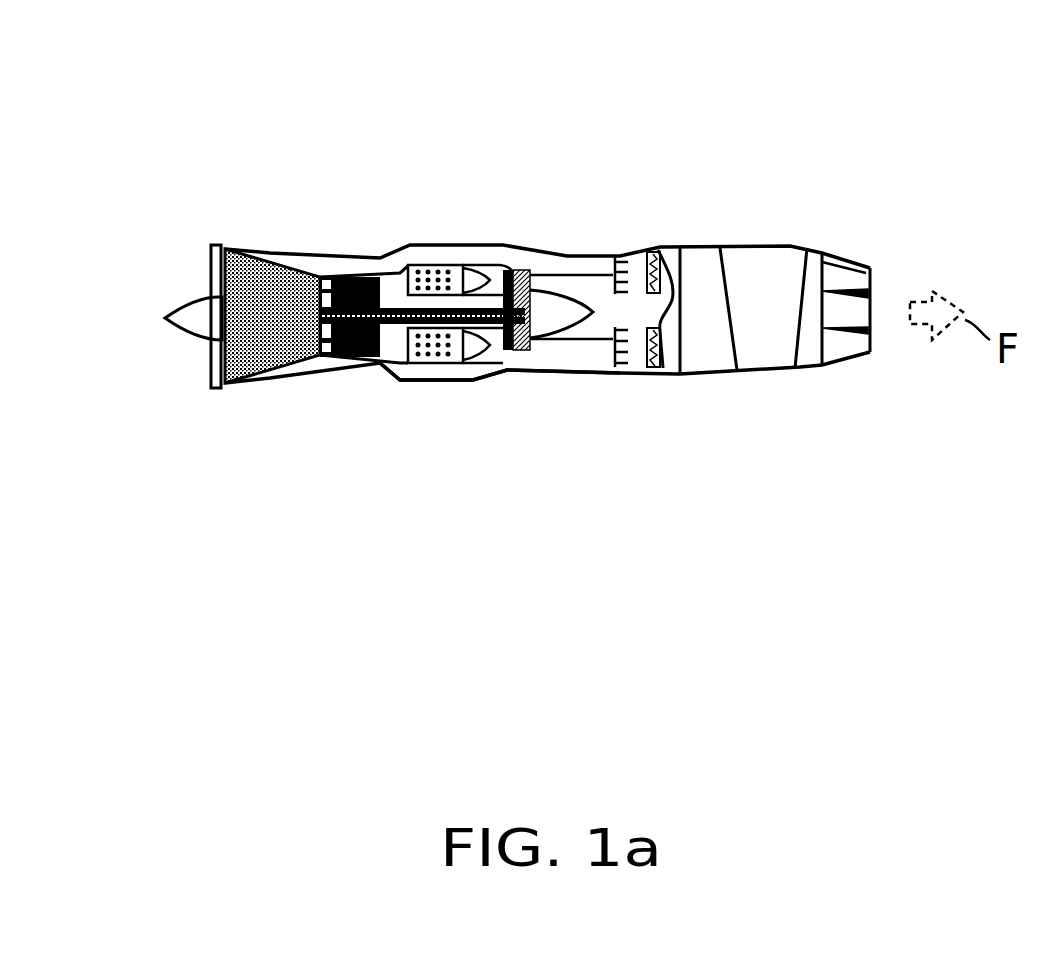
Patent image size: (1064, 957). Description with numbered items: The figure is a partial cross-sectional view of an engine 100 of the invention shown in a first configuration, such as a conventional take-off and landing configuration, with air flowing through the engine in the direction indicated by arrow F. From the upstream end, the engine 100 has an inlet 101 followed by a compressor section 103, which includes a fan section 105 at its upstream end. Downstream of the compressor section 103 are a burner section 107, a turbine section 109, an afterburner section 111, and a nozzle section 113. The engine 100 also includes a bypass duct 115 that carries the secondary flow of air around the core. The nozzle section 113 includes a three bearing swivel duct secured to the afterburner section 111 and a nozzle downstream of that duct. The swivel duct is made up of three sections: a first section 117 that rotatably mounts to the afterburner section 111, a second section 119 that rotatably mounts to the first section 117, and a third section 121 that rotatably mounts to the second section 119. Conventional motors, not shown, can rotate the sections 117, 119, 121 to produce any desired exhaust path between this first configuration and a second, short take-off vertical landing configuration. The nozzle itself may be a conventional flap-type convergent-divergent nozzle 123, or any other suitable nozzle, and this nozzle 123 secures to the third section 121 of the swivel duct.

The engine 100 is at (976, 161).
The inlet 101 is at (207, 362).
The compressor section 103 is at (385, 247).
The fan section 105 is at (252, 372).
The burner section 107 is at (446, 268).
The turbine section 109 is at (508, 280).
The afterburner section 111 is at (623, 240).
The nozzle section 113 is at (866, 246).
The bypass duct 115 is at (503, 372).
The first section 117 is at (703, 358).
The second section 119 is at (765, 352).
The third section 121 is at (810, 368).
The convergent-divergent nozzle 123 is at (862, 275).